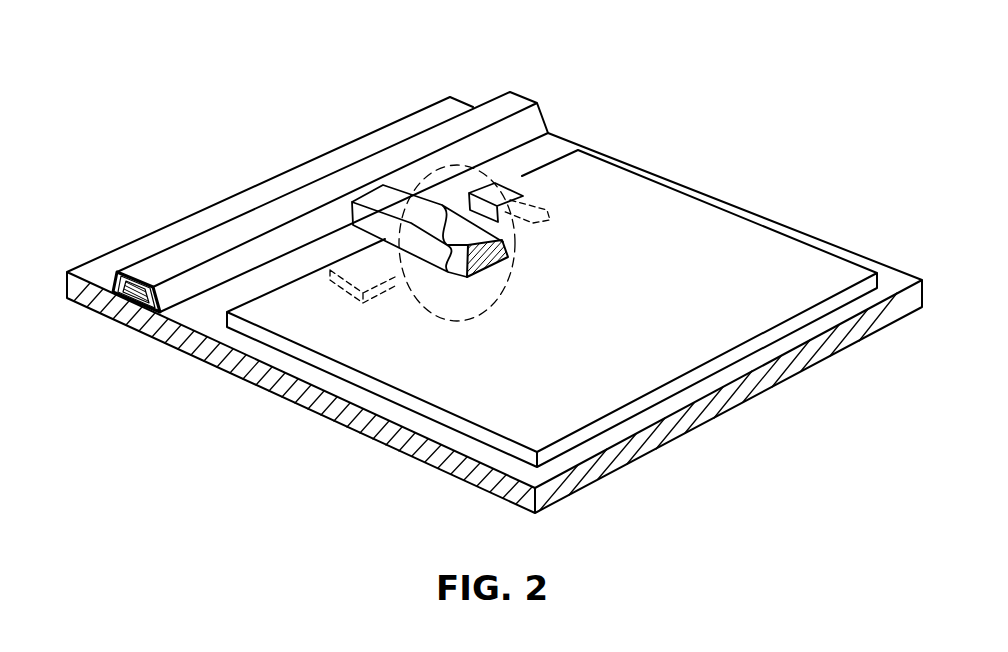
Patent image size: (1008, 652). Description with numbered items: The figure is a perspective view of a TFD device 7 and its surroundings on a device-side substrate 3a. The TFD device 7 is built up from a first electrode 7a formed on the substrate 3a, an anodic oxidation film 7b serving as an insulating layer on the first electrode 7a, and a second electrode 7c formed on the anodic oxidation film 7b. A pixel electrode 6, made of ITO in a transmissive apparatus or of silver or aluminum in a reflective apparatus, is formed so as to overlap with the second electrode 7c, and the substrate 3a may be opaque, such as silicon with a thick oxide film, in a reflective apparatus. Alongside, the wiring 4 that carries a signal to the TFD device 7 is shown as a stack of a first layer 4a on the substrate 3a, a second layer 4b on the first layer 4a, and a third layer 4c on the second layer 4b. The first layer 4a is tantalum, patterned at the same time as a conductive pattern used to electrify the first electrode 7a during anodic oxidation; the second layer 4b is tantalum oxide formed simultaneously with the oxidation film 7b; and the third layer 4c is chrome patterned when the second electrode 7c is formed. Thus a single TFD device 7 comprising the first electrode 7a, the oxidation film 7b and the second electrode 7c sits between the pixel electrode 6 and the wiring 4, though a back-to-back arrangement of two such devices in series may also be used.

The substrate 3a is at (340, 426).
The pixel electrode 6 is at (565, 392).
The wiring 4 is at (258, 212).
The first layer 4a is at (134, 298).
The second layer 4b is at (160, 306).
The third layer 4c is at (116, 278).
The TFD device 7 is at (447, 206).
The first electrode 7a is at (495, 268).
The anodic oxidation film 7b is at (452, 252).
The second electrode 7c is at (487, 216).